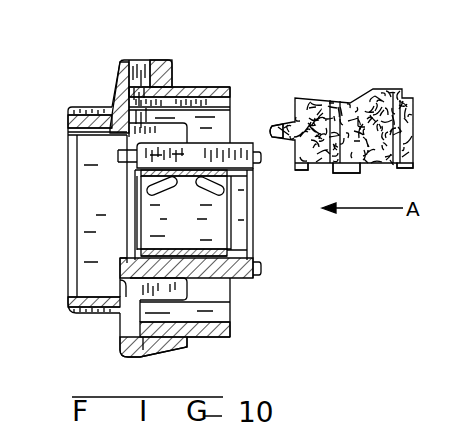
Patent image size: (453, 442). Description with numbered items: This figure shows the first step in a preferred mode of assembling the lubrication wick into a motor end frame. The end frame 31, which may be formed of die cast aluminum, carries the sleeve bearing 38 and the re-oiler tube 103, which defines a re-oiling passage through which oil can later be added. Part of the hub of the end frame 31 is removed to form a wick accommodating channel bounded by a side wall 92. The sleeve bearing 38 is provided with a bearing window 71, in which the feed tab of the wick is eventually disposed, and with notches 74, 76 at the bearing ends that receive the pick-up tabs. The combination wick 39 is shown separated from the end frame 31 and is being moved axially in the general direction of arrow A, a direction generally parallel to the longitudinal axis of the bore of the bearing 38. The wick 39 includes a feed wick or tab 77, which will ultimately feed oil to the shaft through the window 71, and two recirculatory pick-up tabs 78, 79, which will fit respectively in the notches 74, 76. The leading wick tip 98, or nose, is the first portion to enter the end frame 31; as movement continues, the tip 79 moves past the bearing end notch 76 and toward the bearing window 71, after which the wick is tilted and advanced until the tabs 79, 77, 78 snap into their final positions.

The end frame 31 is at (177, 87).
The sleeve bearing 38 is at (97, 210).
The combination wick 39 is at (368, 100).
The bearing window 71 is at (178, 183).
The notch 74 is at (236, 178).
The bearing end notch 76 is at (138, 175).
The feed wick or tab 77 is at (349, 173).
The recirculatory pick-up tab 78 is at (401, 168).
The recirculatory pick-up tab 79 is at (300, 170).
The side wall 92 is at (150, 160).
The wick tip 98 is at (276, 124).
The re-oiler tube 103 is at (147, 60).